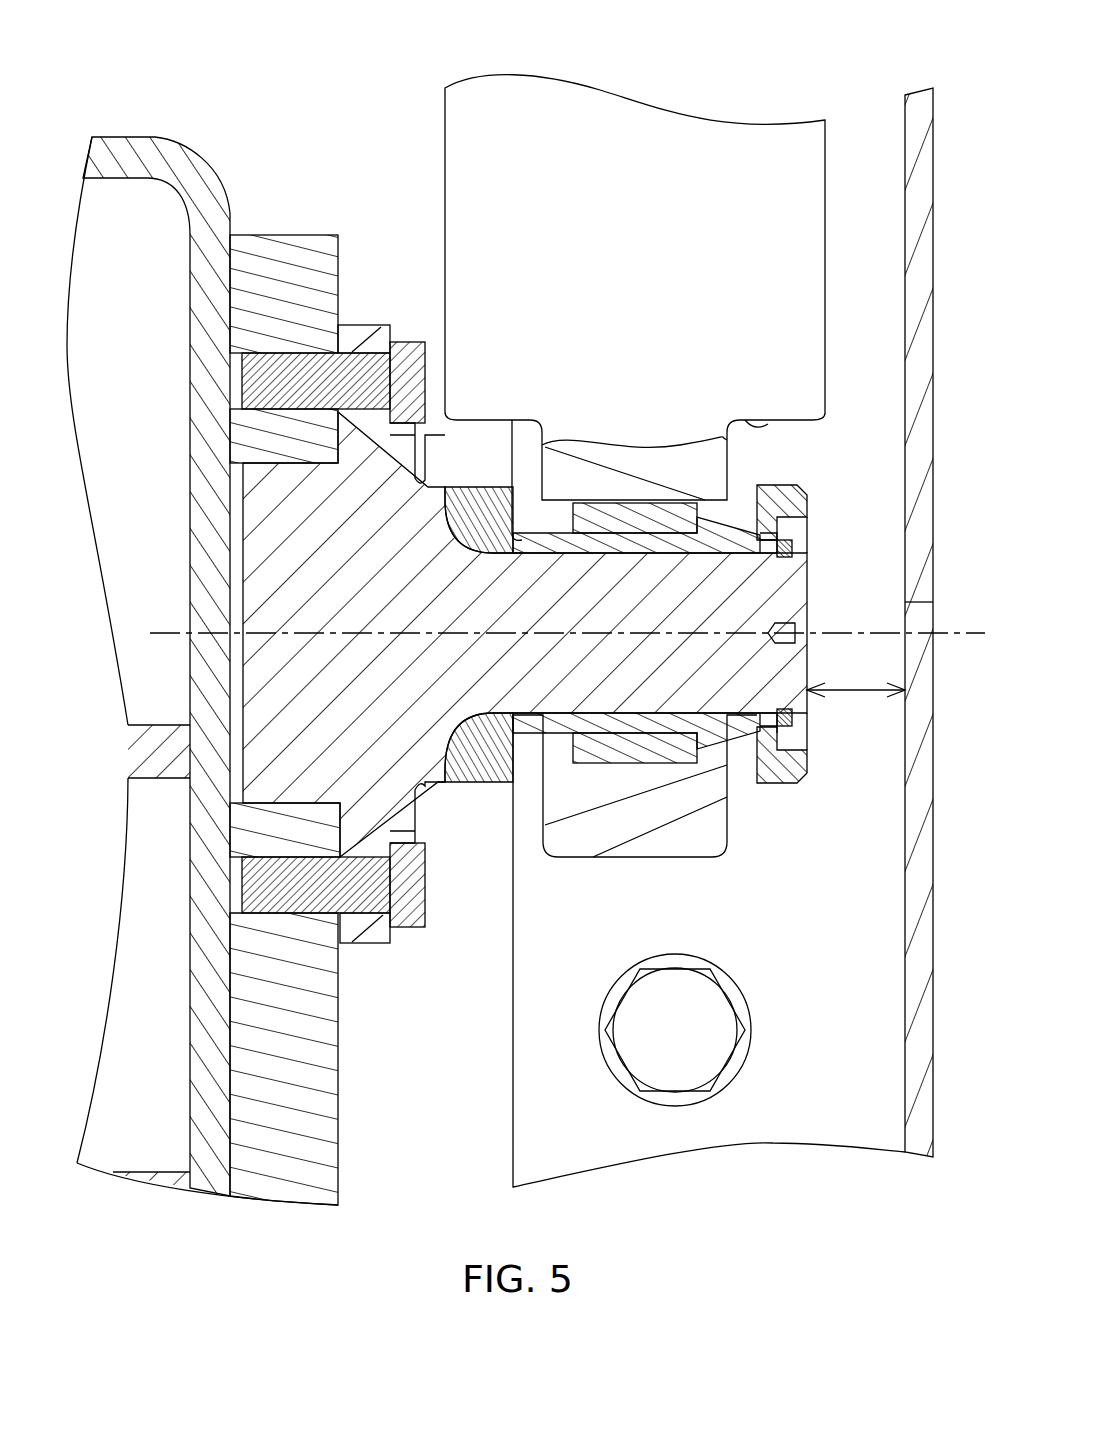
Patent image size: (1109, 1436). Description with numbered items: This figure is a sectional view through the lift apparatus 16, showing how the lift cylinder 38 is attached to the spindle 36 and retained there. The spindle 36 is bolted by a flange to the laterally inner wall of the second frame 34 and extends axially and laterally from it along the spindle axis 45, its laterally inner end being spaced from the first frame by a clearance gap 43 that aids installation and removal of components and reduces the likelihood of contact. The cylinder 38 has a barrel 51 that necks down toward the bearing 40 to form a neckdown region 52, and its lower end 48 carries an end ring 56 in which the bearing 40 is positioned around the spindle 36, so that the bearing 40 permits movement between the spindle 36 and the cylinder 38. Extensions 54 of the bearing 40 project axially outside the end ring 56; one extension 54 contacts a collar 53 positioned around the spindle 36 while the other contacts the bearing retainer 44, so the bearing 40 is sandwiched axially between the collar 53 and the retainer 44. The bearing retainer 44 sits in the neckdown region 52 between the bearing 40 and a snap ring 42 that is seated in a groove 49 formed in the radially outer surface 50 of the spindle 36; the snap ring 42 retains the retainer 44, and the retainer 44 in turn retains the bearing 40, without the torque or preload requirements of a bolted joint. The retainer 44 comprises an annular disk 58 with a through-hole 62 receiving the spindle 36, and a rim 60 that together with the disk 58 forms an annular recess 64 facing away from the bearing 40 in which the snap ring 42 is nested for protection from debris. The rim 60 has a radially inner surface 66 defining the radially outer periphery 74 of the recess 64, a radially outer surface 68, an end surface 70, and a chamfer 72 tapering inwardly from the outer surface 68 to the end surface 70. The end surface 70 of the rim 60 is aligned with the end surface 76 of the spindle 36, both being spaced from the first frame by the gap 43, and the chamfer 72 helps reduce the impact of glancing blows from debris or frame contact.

The lift apparatus 16 is at (268, 62).
The second frame 34 is at (160, 135).
The spindle 36 is at (543, 602).
The lift cylinder 38 is at (528, 152).
The bearing 40 is at (630, 525).
The snap ring 42 is at (806, 742).
The gap 43 is at (858, 688).
The bearing retainer 44 is at (790, 795).
The spindle axis 45 is at (148, 633).
The lower end 48 is at (572, 855).
The groove 49 is at (790, 553).
The radially outer surface 50 is at (625, 740).
The barrel 51 is at (488, 202).
The neckdown region 52 is at (757, 425).
The collar 53 is at (490, 782).
The extensions 54 is at (530, 483).
The end ring 56 is at (700, 857).
The annular disk 58 is at (745, 548).
The rim 60 is at (785, 492).
The through-hole 62 is at (772, 552).
The annular recess 64 is at (808, 772).
The radially inner surface 66 is at (855, 542).
The radially outer surface 68 is at (770, 490).
The end surface 70 is at (808, 512).
The chamfer 72 is at (803, 490).
The radially outer periphery 74 is at (784, 548).
The end surface 76 is at (810, 718).